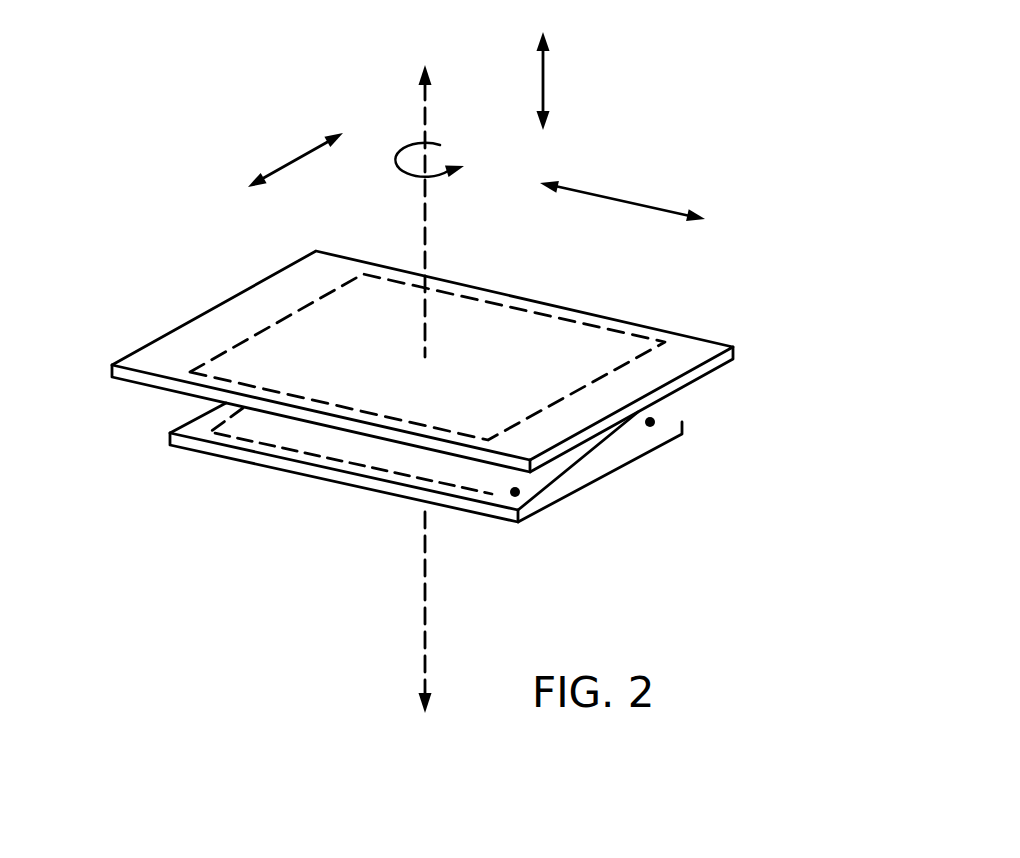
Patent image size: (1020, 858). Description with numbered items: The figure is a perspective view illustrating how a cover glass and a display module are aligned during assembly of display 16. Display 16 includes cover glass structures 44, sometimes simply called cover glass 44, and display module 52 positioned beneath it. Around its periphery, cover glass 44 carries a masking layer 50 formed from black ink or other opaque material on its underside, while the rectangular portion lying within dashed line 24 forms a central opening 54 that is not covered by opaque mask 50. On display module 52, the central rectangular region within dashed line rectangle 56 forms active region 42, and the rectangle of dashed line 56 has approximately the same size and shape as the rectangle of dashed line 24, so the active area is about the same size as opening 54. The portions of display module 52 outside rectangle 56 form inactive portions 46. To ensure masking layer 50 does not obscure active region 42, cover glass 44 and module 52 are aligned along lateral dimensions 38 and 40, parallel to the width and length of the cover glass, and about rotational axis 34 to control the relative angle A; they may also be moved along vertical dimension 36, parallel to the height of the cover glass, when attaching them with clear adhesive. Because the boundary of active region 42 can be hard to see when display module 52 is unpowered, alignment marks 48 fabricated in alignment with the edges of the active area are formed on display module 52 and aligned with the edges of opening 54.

The display 16 is at (88, 283).
The dashed line 24 is at (590, 327).
The rotational axis 34 is at (425, 100).
The vertical dimension 36 is at (545, 68).
The lateral dimension 38 is at (291, 158).
The lateral dimension 40 is at (617, 199).
The active region 42 is at (263, 430).
The cover glass structures 44 is at (762, 353).
The inactive portions 46 is at (195, 427).
The alignment marks 48 is at (546, 494).
The masking layer 50 is at (183, 347).
The display module 52 is at (714, 423).
The central opening 54 is at (268, 342).
The dashed line rectangle 56 is at (307, 452).